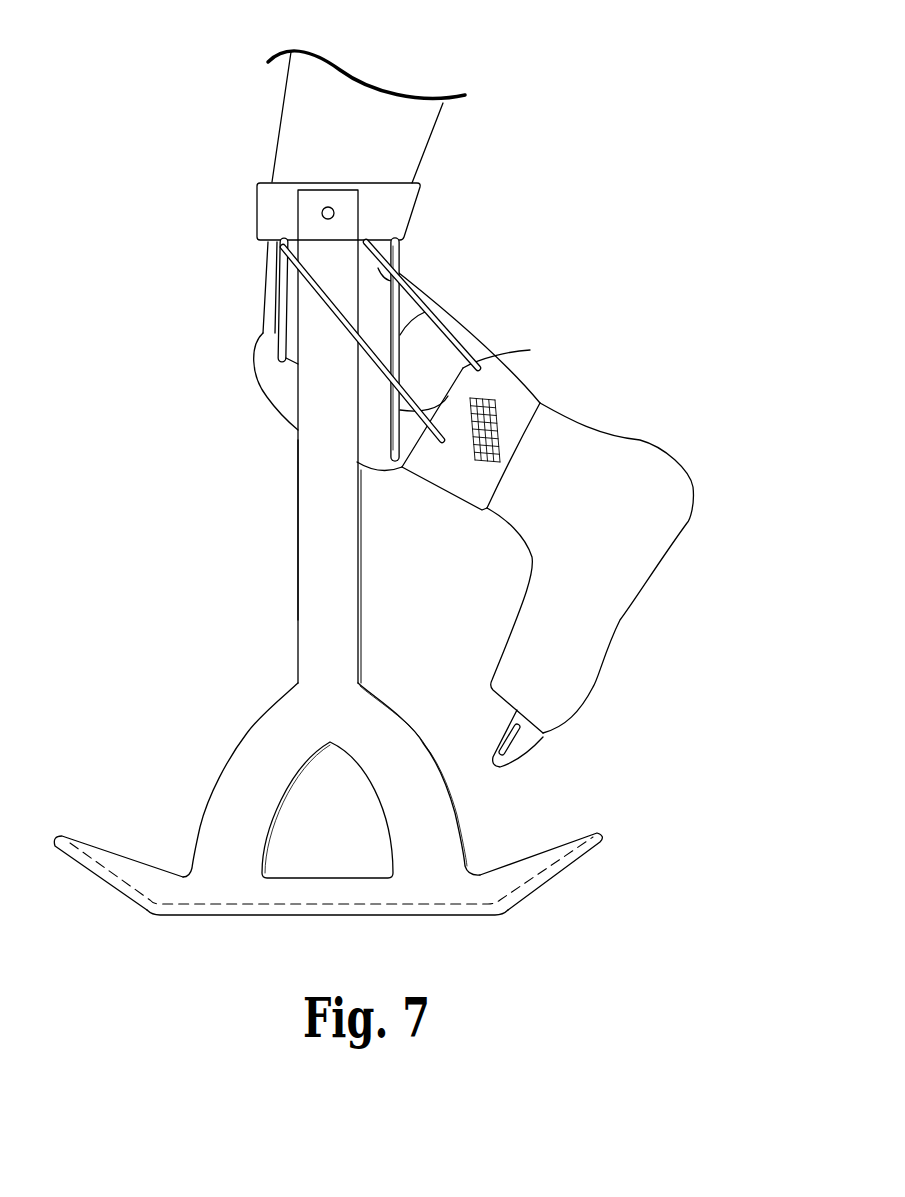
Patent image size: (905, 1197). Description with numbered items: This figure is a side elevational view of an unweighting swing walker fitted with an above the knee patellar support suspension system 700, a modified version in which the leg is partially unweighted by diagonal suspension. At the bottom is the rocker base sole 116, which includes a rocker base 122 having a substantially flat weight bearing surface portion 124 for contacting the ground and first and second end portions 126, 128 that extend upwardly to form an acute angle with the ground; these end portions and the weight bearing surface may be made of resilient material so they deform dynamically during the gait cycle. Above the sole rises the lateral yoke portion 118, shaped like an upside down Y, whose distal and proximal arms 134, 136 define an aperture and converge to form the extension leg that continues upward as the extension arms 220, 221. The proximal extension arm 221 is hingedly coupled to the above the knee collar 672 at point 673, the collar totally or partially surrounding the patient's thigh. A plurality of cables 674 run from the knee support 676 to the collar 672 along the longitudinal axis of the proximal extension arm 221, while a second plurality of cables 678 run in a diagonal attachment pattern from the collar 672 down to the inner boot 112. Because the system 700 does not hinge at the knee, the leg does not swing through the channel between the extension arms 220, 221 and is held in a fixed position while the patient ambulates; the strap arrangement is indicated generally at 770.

The above the knee patellar support suspension system 700 is at (450, 250).
The above the knee collar 672 is at (397, 205).
The point 673 is at (334, 213).
The extension arm 220 is at (362, 570).
The proximal extension arm 221 is at (312, 519).
The boot 112 is at (620, 453).
The strap arrangement 770 is at (216, 300).
The plurality of cables 674 is at (277, 317).
The second plurality of cables 678 is at (457, 342).
The knee support 676 is at (280, 390).
The rocker base sole 116 is at (328, 834).
The lateral yoke portion 118 is at (420, 737).
The first end portion 126 is at (77, 863).
The second end portion 128 is at (575, 860).
The weight bearing surface portion 124 is at (240, 916).
The rocker base 122 is at (373, 908).
The proximal arm 136 is at (421, 798).
The distal arm 134 is at (263, 799).